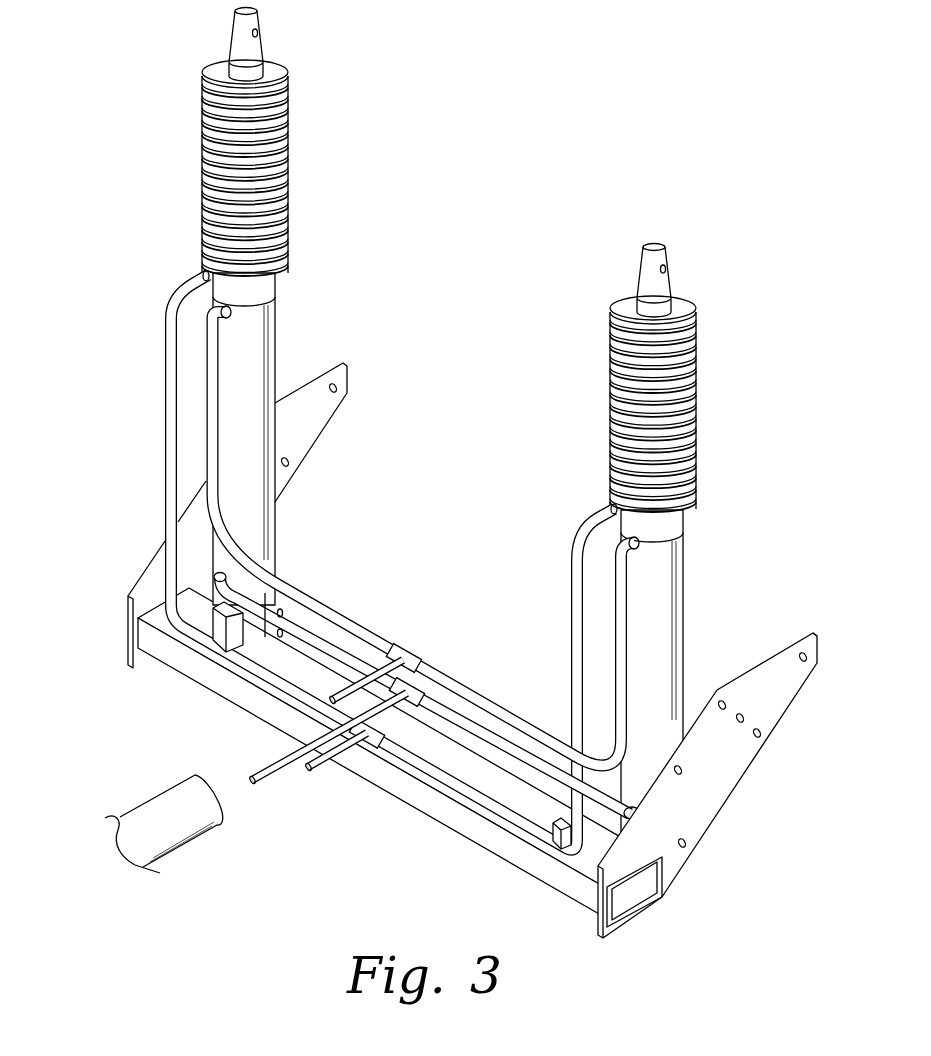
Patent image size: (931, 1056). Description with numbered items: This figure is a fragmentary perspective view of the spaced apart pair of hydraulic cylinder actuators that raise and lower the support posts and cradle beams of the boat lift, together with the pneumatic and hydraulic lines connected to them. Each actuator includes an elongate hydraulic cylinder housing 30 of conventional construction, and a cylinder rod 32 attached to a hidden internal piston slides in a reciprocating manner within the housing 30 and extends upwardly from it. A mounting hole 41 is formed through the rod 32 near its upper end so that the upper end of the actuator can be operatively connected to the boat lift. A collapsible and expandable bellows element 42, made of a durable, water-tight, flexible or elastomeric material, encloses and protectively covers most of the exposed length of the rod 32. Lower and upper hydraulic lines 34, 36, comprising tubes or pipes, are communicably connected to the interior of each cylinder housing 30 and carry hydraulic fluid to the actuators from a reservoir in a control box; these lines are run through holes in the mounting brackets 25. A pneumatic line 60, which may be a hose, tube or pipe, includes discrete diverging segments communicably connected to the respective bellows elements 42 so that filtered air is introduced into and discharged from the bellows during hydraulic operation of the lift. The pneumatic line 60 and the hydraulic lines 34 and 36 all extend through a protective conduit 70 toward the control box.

The mounting brackets 25 is at (150, 562).
The hydraulic cylinder housing 30 is at (277, 333).
The cylinder rod 32 is at (259, 14).
The lower hydraulic line 34 is at (278, 758).
The upper hydraulic line 36 is at (372, 650).
The mounting hole 41 is at (259, 34).
The bellows element 42 is at (290, 168).
The pneumatic line 60 is at (323, 765).
The protective conduit 70 is at (145, 802).